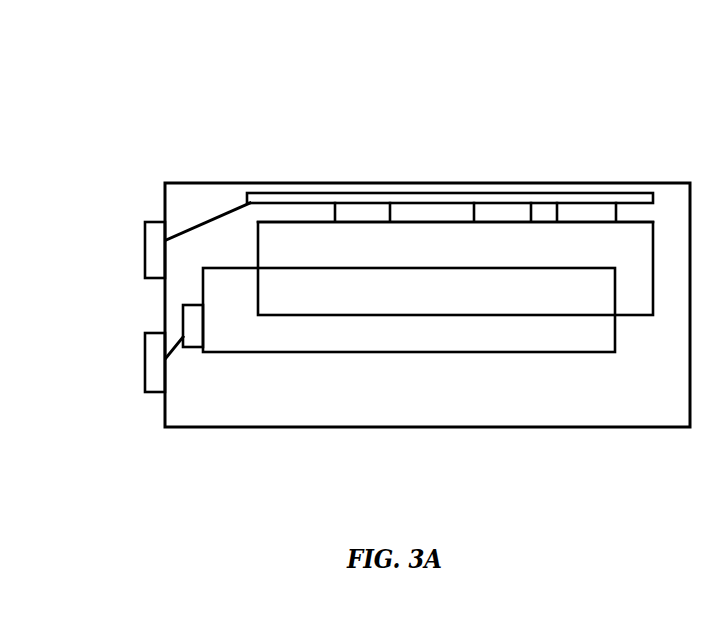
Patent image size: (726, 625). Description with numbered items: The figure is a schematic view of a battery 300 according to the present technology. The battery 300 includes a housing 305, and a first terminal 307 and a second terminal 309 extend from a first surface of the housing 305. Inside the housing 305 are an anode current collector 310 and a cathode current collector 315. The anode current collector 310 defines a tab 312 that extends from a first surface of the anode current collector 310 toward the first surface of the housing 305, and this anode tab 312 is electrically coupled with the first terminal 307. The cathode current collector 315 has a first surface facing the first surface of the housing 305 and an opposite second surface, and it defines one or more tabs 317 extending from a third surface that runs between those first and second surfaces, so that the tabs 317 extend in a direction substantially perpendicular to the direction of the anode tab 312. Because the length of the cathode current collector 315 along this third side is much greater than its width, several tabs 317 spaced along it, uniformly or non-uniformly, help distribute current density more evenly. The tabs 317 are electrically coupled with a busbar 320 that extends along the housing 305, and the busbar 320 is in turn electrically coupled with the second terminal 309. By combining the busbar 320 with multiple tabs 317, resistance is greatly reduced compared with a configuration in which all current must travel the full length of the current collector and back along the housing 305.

The battery 300 is at (216, 84).
The housing 305 is at (188, 182).
The first terminal 307 is at (144, 372).
The second terminal 309 is at (144, 258).
The anode current collector 310 is at (378, 353).
The tab 312 is at (192, 350).
The cathode current collector 315 is at (257, 250).
The tabs 317 is at (392, 212).
The busbar 320 is at (553, 192).